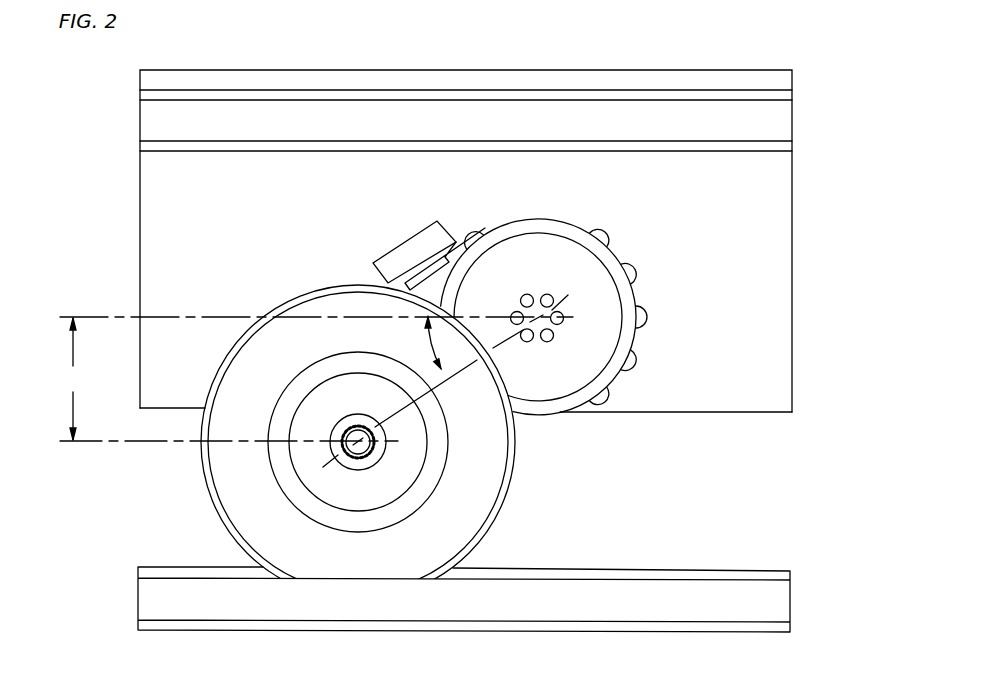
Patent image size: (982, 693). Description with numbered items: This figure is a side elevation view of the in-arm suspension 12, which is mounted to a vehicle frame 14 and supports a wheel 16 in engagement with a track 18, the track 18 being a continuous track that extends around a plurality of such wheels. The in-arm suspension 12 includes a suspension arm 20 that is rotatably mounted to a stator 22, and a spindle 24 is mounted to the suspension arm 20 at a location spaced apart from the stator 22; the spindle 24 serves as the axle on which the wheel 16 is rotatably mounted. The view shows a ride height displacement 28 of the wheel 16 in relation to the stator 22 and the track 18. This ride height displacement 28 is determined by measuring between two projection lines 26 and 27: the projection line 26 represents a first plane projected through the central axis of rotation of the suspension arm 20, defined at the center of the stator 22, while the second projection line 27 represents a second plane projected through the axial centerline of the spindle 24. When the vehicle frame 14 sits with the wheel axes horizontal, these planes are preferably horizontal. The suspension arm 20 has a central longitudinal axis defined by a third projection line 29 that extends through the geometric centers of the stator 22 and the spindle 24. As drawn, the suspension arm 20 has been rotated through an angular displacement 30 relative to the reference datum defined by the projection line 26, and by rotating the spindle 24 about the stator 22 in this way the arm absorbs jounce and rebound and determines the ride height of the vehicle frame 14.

The in-arm suspension system 12 is at (282, 58).
The vehicle frame 14 is at (782, 298).
The wheel 16 is at (328, 300).
The track 18 is at (663, 133).
The suspension arm 20 is at (440, 283).
The stator 22 is at (540, 248).
The spindle 24 is at (355, 450).
The projection line 26 is at (96, 316).
The second projection line 27 is at (92, 443).
The ride height displacement 28 is at (71, 379).
The third projection line 29 is at (466, 364).
The angular displacement 30 is at (433, 352).